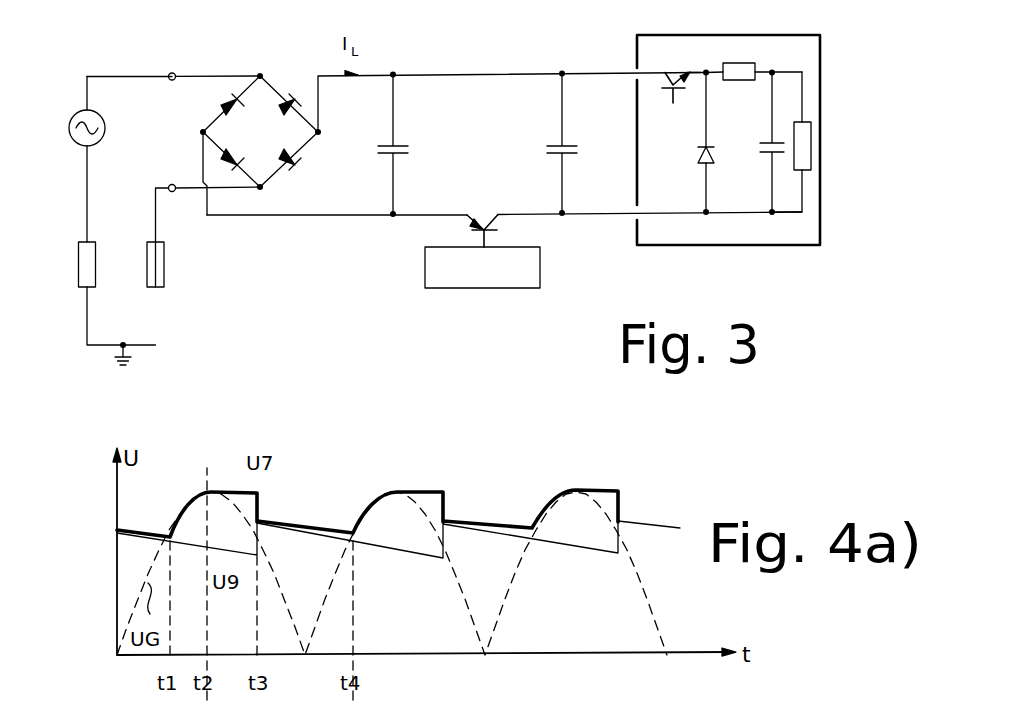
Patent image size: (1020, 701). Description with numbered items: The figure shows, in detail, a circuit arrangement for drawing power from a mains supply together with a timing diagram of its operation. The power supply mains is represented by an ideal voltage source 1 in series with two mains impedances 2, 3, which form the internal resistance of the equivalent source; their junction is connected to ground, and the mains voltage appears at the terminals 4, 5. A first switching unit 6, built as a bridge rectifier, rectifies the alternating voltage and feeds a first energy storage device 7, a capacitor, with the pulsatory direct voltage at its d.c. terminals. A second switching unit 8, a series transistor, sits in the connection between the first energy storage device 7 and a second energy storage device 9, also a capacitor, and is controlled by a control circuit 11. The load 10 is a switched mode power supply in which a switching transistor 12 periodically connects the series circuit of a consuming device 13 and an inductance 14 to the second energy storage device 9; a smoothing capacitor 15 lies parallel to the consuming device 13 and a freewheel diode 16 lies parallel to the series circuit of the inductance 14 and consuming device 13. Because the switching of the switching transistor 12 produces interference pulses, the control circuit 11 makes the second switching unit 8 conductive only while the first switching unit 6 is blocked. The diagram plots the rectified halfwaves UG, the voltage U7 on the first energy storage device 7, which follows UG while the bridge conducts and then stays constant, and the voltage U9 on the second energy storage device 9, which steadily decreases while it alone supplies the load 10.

The voltage source 1 is at (77, 107).
The mains impedance 2 is at (79, 264).
The mains impedance 3 is at (165, 262).
The terminal 4 is at (173, 72).
The terminal 5 is at (172, 184).
The first switching unit 6 is at (268, 122).
The first energy storage device 7 is at (402, 140).
The second switching unit 8 is at (484, 222).
The second energy storage device 9 is at (571, 140).
The load 10 is at (742, 35).
The control circuit 11 is at (482, 288).
The switching transistor 12 is at (682, 83).
The consuming device 13 is at (802, 122).
The inductance 14 is at (749, 81).
The smoothing capacitor 15 is at (766, 155).
The freewheel diode 16 is at (700, 166).